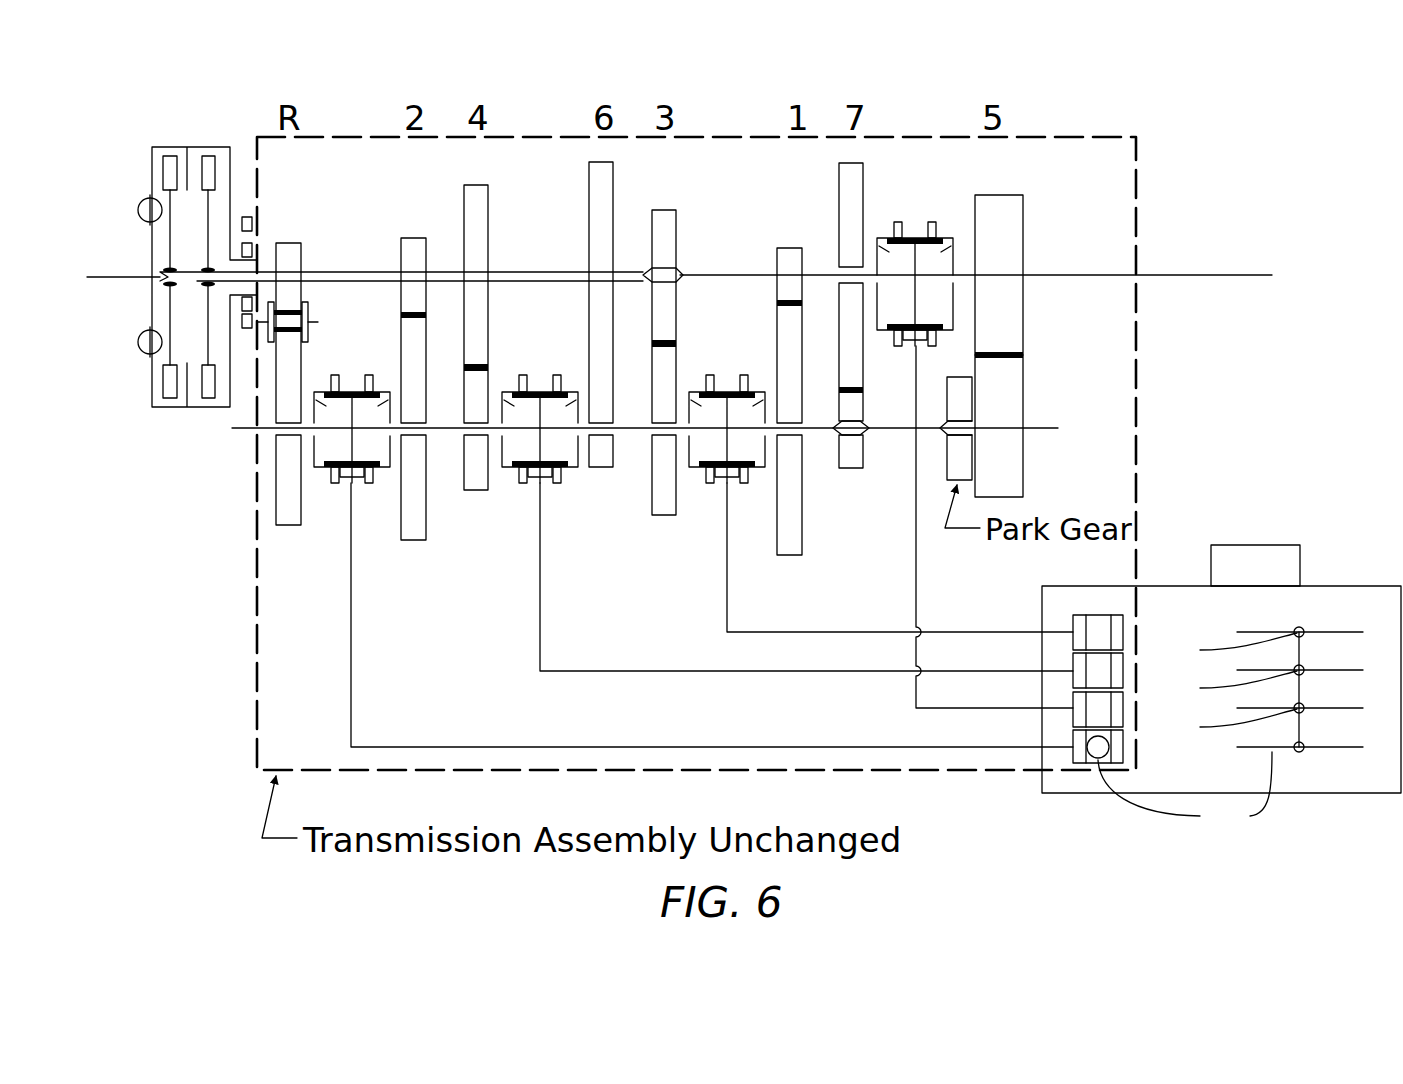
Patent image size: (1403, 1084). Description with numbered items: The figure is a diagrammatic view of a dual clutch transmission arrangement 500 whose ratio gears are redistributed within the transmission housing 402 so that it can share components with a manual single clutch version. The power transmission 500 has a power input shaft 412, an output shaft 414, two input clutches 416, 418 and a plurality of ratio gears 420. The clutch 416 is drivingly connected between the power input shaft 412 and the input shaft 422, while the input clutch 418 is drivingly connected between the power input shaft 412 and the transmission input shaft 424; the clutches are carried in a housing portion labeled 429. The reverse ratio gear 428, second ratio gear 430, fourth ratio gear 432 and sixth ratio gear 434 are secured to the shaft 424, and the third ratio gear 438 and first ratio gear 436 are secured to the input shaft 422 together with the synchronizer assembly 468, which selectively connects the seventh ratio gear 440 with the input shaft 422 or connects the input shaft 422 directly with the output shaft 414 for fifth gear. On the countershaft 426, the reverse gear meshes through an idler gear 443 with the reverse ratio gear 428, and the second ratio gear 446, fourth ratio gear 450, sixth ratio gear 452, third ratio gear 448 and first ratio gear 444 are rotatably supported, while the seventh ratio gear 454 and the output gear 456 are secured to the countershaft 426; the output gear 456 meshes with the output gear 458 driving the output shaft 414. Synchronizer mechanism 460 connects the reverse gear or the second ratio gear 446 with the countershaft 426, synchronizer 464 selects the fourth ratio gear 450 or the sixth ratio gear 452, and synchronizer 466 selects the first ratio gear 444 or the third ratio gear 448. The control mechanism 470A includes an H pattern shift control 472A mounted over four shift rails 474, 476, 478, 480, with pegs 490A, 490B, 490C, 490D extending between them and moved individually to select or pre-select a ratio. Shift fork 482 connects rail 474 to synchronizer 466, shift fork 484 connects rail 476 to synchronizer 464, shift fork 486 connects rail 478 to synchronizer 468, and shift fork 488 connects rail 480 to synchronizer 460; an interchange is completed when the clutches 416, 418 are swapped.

The transmission housing 402 is at (1099, 133).
The power input shaft 412 is at (118, 271).
The output shaft 414 is at (1222, 270).
The input clutch 416 is at (183, 141).
The input clutch 418 is at (207, 141).
The ratio gears 420 is at (608, 550).
The input shaft 422 is at (195, 283).
The transmission input shaft 424 is at (222, 290).
The countershaft 426 is at (235, 428).
The reverse ratio gear 428 is at (290, 241).
The clutch housing 429 is at (197, 277).
The second ratio gear 430 is at (399, 257).
The fourth ratio gear 432 is at (490, 204).
The sixth ratio gear 434 is at (615, 216).
The first ratio gear 436 is at (803, 257).
The third ratio gear 438 is at (678, 245).
The seventh ratio gear 440 is at (867, 192).
The idler gear 443 is at (312, 315).
The first ratio gear 444 is at (812, 540).
The second ratio gear 446 is at (303, 512).
The third ratio gear 448 is at (678, 505).
The fourth ratio gear 450 is at (490, 480).
The sixth ratio gear 452 is at (617, 447).
The seventh ratio gear 454 is at (867, 452).
The output gear 456 is at (427, 518).
The output gear 458 is at (1026, 322).
The synchronizer mechanism 460 is at (352, 380).
The synchronizer mechanism 464 is at (540, 380).
The synchronizer mechanism 466 is at (733, 372).
The synchronizer assembly 468 is at (913, 226).
The control mechanism 470A is at (1180, 584).
The H pattern shift control 472A is at (1303, 626).
The shift rail 474 is at (1073, 626).
The shift rail 476 is at (1073, 664).
The shift rail 478 is at (1073, 703).
The shift rail 480 is at (1073, 742).
The shift fork 482 is at (755, 637).
The shift fork 484 is at (763, 674).
The shift fork 486 is at (917, 567).
The shift fork 488 is at (767, 748).
The peg 490A is at (1112, 633).
The peg 490B is at (1112, 672).
The peg 490C is at (1112, 710).
The peg 490D is at (1185, 789).
The dual clutch transmission arrangement 500 is at (1170, 212).